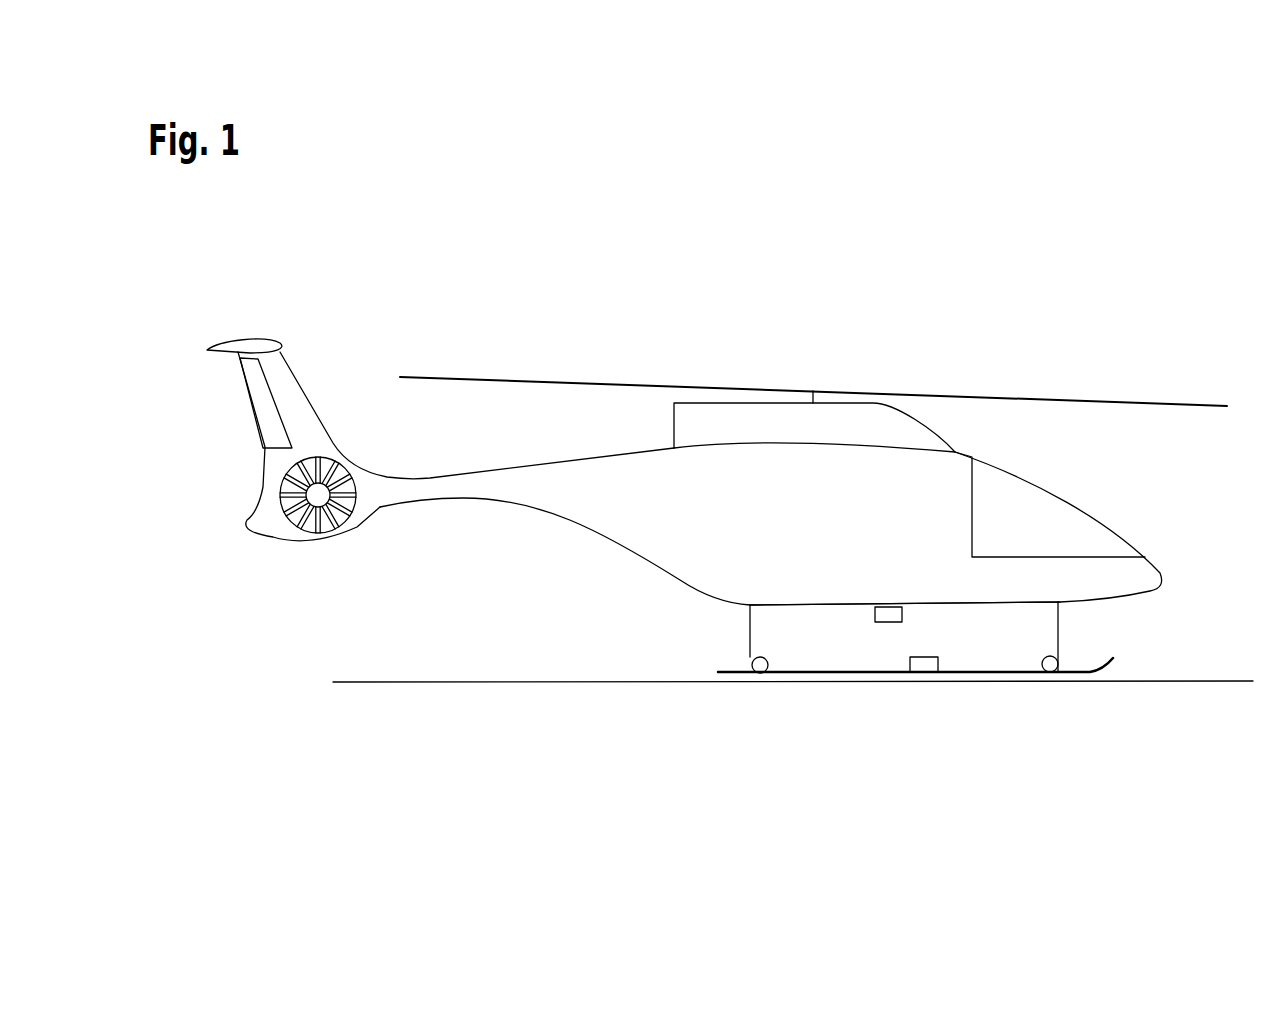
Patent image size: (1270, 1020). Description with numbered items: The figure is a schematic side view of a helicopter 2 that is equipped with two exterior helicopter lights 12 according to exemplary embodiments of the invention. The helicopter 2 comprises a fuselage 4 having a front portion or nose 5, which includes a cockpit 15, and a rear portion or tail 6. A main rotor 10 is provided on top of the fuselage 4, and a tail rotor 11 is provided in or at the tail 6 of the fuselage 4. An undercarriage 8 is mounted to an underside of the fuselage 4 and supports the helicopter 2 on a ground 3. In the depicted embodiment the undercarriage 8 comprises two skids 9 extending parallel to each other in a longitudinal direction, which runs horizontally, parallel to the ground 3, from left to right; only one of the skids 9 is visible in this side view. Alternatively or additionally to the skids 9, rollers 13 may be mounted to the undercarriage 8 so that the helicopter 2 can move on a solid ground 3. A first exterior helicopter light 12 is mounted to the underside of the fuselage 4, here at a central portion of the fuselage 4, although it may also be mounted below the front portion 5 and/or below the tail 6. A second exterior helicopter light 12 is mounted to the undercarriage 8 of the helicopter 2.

The helicopter 2 is at (1071, 242).
The ground 3 is at (1172, 683).
The fuselage 4 is at (676, 617).
The front portion or nose 5 is at (1175, 556).
The rear portion or tail 6 is at (431, 528).
The undercarriage 8 is at (1152, 623).
The skid 9 is at (1108, 667).
The main rotor 10 is at (1110, 382).
The tail rotor 11 is at (333, 444).
The exterior helicopter light 12 is at (885, 622).
The roller 13 is at (760, 673).
The cockpit 15 is at (1088, 494).